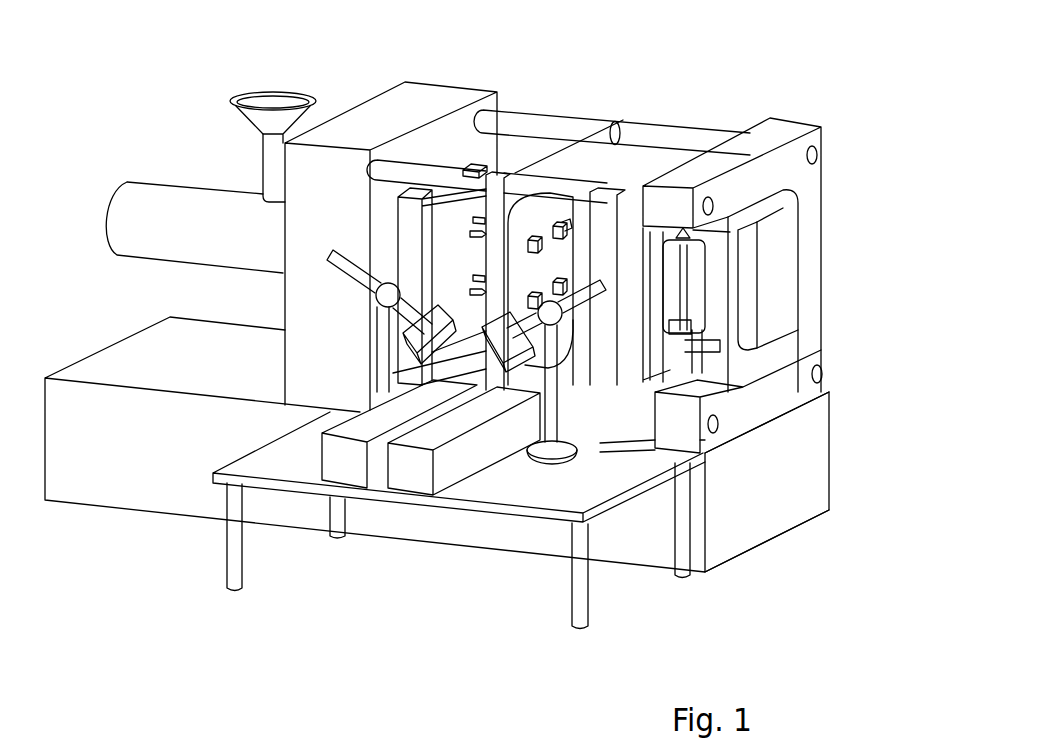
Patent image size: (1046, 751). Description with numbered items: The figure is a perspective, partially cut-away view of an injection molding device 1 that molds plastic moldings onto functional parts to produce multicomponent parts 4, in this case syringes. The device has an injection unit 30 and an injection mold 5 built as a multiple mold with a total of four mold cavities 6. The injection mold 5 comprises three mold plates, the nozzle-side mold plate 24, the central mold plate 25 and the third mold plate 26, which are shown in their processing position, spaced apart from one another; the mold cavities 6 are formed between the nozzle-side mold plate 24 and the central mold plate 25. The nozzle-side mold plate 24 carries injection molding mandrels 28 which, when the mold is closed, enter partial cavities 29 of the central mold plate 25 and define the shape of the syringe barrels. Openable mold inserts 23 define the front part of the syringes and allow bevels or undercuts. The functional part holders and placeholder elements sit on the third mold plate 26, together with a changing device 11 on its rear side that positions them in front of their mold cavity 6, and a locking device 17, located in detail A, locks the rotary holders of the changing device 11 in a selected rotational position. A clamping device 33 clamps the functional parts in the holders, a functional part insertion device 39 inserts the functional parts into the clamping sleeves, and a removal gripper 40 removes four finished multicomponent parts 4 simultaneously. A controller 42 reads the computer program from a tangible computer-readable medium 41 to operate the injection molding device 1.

The injection molding device 1 is at (336, 73).
The multicomponent part 4 is at (458, 234).
The injection mold 5 is at (739, 234).
The mold cavity 6 is at (492, 115).
The changing device 11 is at (747, 282).
The locking device 17 is at (782, 293).
The openable mold insert 23 is at (562, 223).
The nozzle-side mold plate 24 is at (475, 170).
The central mold plate 25 is at (555, 212).
The third mold plate 26 is at (708, 150).
The injection molding mandrel 28 is at (458, 293).
The partial cavity 29 is at (544, 207).
The injection unit 30 is at (218, 238).
The clamping device 33 is at (740, 250).
The functional part insertion device 39 is at (553, 376).
The removal gripper 40 is at (385, 357).
The tangible computer-readable medium 41 is at (824, 480).
The controller 42 is at (826, 444).
The detail A is at (728, 302).